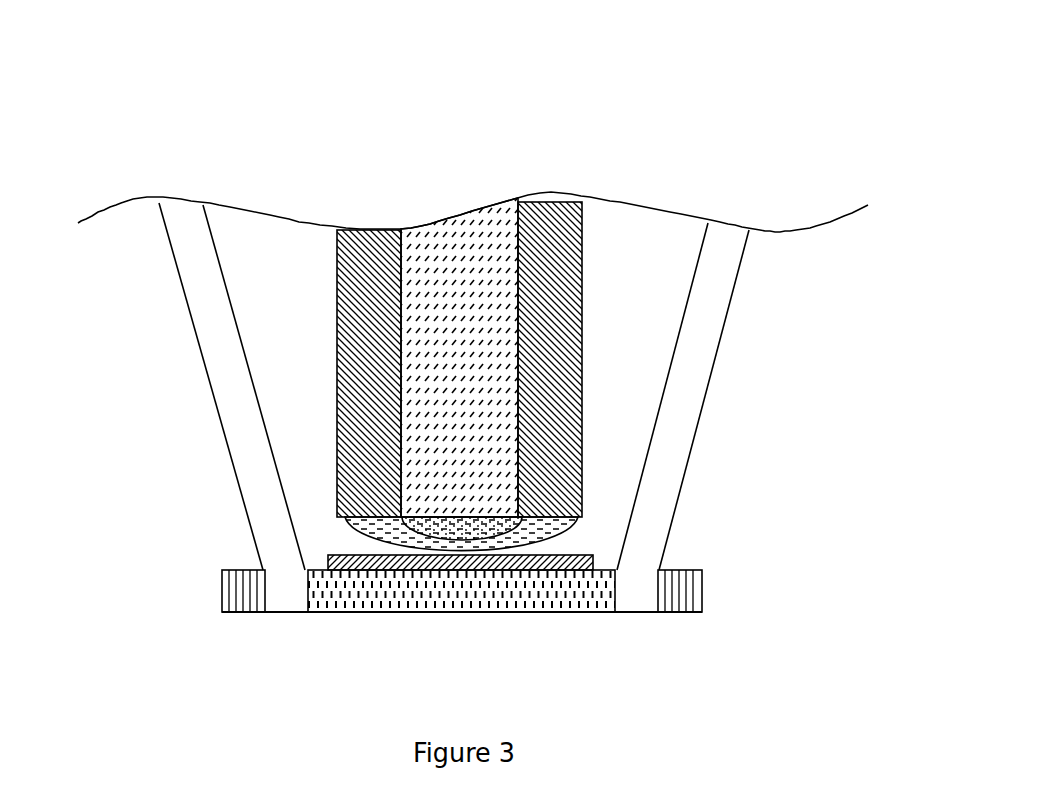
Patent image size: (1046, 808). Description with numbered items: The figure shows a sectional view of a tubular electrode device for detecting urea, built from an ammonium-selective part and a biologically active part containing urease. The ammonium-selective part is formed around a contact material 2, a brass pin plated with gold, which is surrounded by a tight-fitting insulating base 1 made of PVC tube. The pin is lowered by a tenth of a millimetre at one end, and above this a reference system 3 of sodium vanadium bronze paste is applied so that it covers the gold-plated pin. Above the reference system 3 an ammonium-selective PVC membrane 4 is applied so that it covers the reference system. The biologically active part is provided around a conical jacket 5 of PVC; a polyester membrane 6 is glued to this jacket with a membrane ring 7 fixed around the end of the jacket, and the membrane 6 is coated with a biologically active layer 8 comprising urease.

The insulating base 1 is at (548, 215).
The contact material 2 is at (461, 243).
The reference system 3 is at (435, 532).
The NH4+-selective PVC membrane 4 is at (383, 532).
The conical jacket 5 is at (192, 243).
The polyester membrane 6 is at (477, 593).
The membrane ring 7 is at (226, 572).
The biologically active layer 8 is at (565, 569).